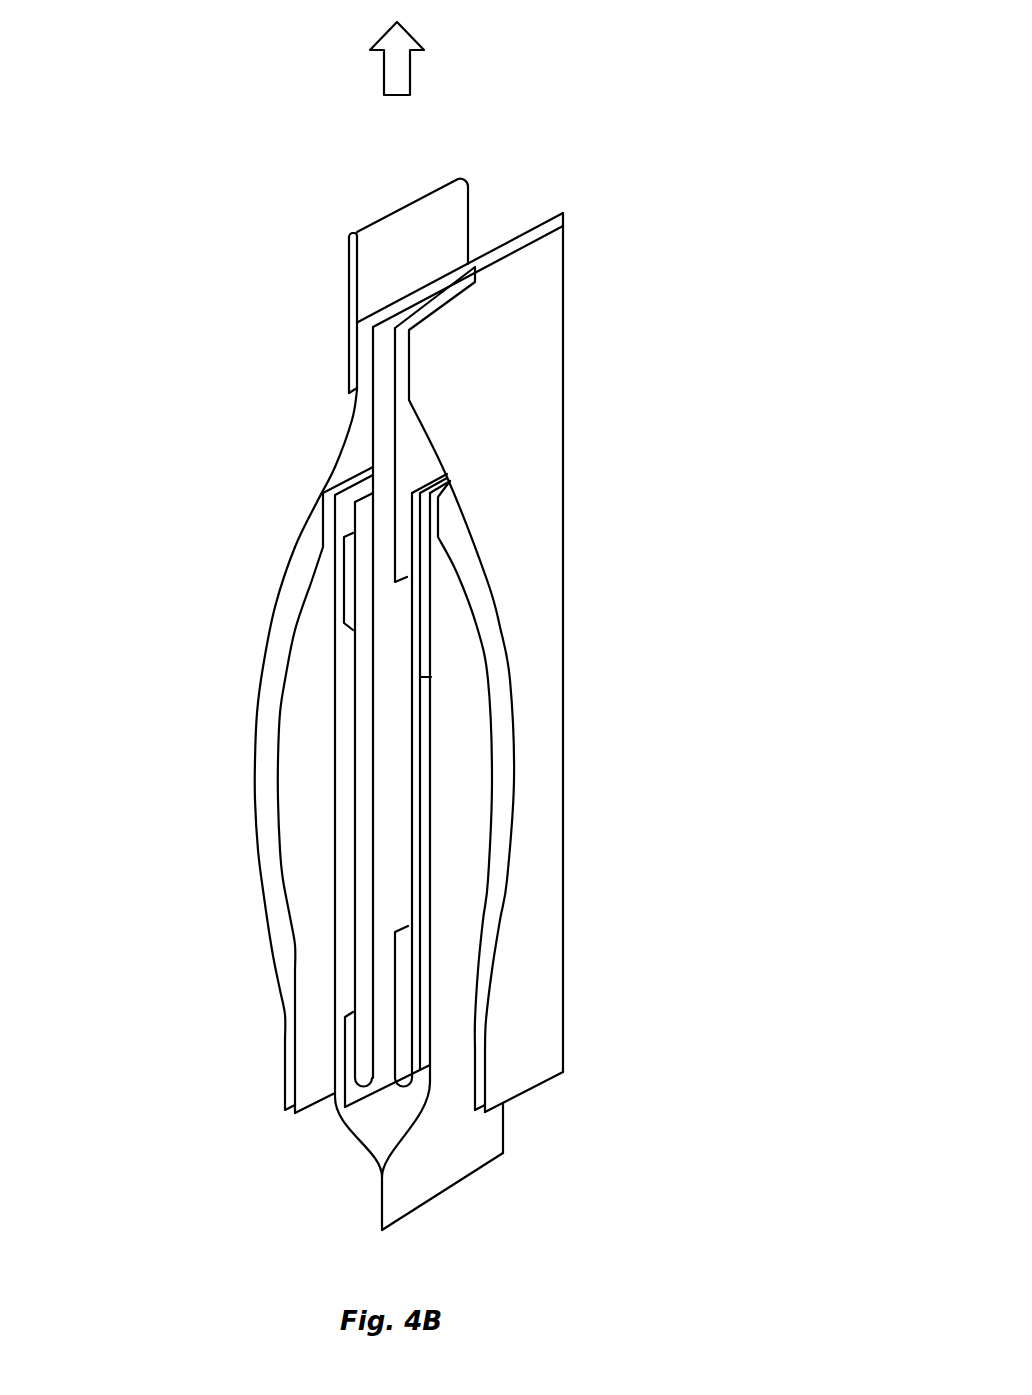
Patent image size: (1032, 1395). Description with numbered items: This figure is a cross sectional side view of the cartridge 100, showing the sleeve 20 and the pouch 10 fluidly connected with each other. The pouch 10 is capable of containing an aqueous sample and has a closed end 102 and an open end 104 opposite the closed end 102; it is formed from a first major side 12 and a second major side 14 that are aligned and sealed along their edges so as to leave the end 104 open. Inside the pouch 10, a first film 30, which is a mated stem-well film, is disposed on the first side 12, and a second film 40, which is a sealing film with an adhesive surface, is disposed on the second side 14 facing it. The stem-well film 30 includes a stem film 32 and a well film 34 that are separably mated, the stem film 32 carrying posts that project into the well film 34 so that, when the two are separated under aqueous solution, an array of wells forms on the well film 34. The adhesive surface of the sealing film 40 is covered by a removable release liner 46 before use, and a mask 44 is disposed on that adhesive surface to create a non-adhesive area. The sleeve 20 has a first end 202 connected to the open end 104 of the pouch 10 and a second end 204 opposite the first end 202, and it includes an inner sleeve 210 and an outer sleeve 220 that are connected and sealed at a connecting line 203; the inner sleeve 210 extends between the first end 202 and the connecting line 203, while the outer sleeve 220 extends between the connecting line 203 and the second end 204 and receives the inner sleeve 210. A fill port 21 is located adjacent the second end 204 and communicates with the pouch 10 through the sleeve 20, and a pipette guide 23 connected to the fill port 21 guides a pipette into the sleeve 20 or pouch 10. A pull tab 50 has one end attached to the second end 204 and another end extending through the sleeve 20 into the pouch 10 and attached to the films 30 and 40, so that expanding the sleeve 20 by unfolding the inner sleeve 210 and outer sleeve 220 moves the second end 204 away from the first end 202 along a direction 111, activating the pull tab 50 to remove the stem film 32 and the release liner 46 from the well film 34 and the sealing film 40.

The pouch 10 is at (500, 1151).
The first major side 12 is at (488, 1128).
The second major side 14 is at (353, 1133).
The sleeve 20 is at (545, 925).
The fill port 21 is at (413, 308).
The pipette guide 23 is at (415, 455).
The first film 30 is at (424, 642).
The stem film 32 is at (400, 962).
The well film 34 is at (425, 792).
The second film 40 is at (333, 840).
The mask 44 is at (348, 563).
The release liner 46 is at (350, 878).
The pull tab 50 is at (380, 417).
The cartridge 100 is at (684, 130).
The closed end 102 is at (440, 1202).
The open end 104 is at (449, 476).
The direction 111 is at (405, 38).
The first end 202 is at (440, 529).
The connecting line 203 is at (545, 1045).
The second end 204 is at (508, 252).
The inner sleeve 210 is at (298, 708).
The outer sleeve 220 is at (265, 765).